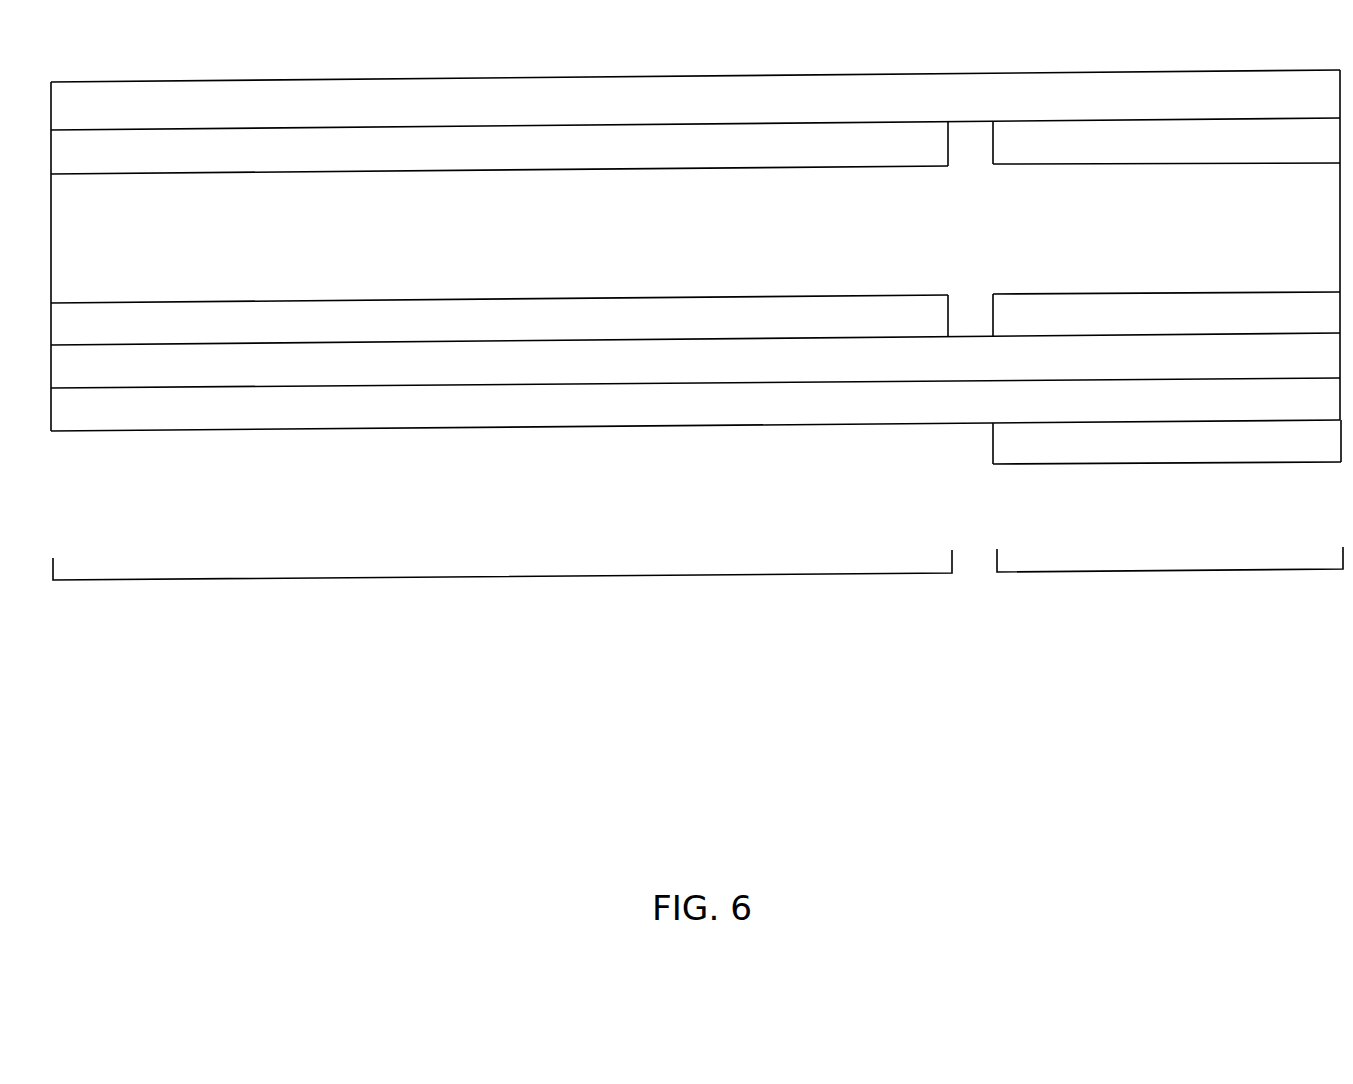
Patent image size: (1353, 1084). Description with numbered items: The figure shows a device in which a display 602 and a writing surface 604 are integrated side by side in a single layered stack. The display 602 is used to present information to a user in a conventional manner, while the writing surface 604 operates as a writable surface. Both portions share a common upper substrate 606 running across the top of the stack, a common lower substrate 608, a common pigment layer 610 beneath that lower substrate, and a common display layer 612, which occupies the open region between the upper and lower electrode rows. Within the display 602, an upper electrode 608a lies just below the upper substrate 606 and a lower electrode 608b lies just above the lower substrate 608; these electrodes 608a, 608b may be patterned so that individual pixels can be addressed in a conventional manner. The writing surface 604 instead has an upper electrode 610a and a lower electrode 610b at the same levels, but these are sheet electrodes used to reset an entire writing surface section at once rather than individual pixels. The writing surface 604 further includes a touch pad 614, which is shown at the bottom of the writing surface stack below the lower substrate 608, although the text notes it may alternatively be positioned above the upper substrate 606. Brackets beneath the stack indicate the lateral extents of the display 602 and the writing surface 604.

The display 602 is at (502, 576).
The writing surface 604 is at (1190, 570).
The upper substrate 606 is at (695, 100).
The lower substrate 608 is at (695, 368).
The electrode 608a is at (499, 148).
The electrode 608b is at (695, 320).
The pigment layer 610 is at (695, 412).
The electrode 610a is at (1166, 143).
The electrode 610b is at (1166, 314).
The display layer 612 is at (222, 237).
The touch pad 614 is at (1167, 442).